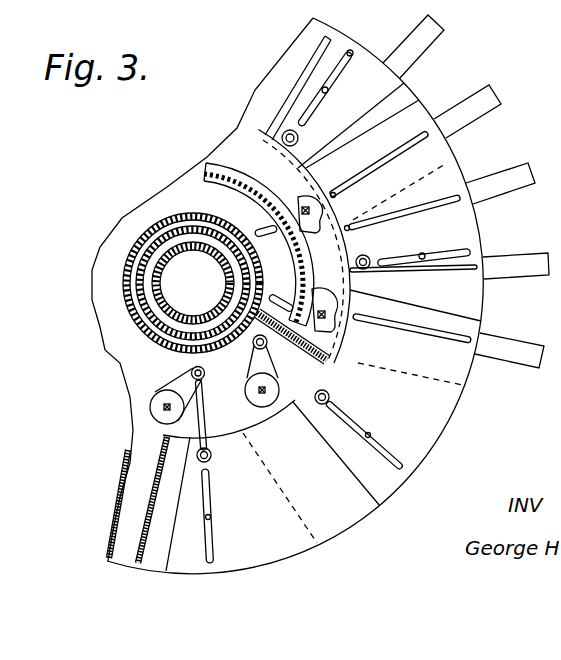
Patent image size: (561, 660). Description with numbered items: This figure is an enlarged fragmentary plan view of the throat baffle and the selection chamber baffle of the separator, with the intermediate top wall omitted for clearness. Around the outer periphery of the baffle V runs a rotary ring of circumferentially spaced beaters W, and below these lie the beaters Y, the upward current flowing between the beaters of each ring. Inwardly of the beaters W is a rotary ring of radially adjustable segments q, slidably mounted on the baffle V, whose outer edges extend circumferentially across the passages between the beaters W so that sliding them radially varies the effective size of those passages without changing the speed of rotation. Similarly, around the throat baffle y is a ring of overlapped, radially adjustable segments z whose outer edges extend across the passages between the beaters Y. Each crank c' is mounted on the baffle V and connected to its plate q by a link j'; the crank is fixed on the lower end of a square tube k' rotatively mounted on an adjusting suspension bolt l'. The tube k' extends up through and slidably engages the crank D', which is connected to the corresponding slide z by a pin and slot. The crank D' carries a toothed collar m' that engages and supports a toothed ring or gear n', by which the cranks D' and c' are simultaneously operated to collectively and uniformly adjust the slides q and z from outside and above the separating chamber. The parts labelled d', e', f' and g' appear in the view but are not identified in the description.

The baffle V is at (128, 392).
The beaters Y is at (312, 60).
The beaters W is at (493, 100).
The radially adjustable segments q is at (350, 100).
The toothed ring n' is at (242, 236).
The crank D' is at (302, 201).
The rod e' is at (379, 167).
The pin g' is at (362, 303).
The rod f' is at (352, 379).
The link d' is at (405, 242).
The toothed collar m' is at (347, 315).
The throat baffle y is at (322, 366).
The radially adjustable segments z is at (340, 354).
The crank c' is at (177, 368).
The link j' is at (208, 421).
The adjusting suspension bolt l' is at (152, 402).
The square tube k' is at (324, 402).